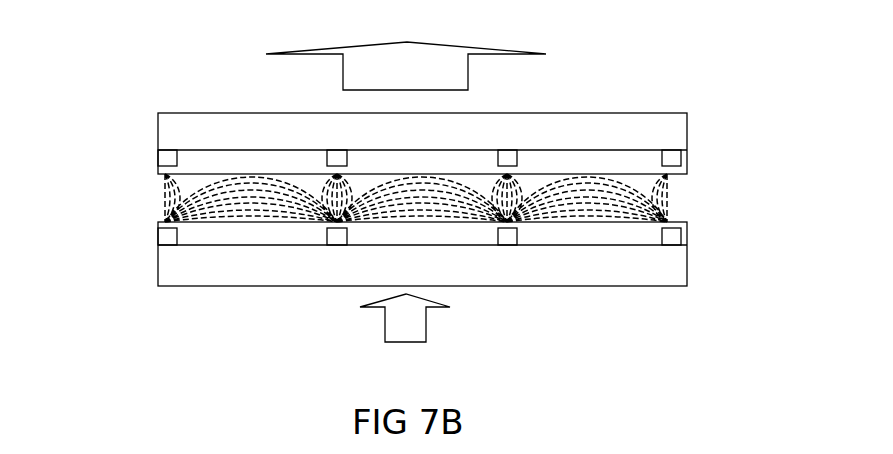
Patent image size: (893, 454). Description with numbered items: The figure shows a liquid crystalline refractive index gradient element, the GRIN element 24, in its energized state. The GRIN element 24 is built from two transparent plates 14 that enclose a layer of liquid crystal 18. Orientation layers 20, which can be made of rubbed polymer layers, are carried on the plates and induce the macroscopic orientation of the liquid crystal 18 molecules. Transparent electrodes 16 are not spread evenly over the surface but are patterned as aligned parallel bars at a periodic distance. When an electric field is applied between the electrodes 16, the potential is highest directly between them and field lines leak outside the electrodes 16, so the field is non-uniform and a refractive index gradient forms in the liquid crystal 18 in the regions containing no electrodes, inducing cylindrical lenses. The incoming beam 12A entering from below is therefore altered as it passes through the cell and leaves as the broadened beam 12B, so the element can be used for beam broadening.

The beam 12A is at (374, 324).
The altered light beam 12B is at (338, 75).
The transparent plates 14 is at (152, 125).
The transparent electrodes 16 is at (670, 237).
The liquid crystal 18 is at (673, 192).
The orientation layers 20 is at (192, 168).
The GRIN element 24 is at (126, 301).